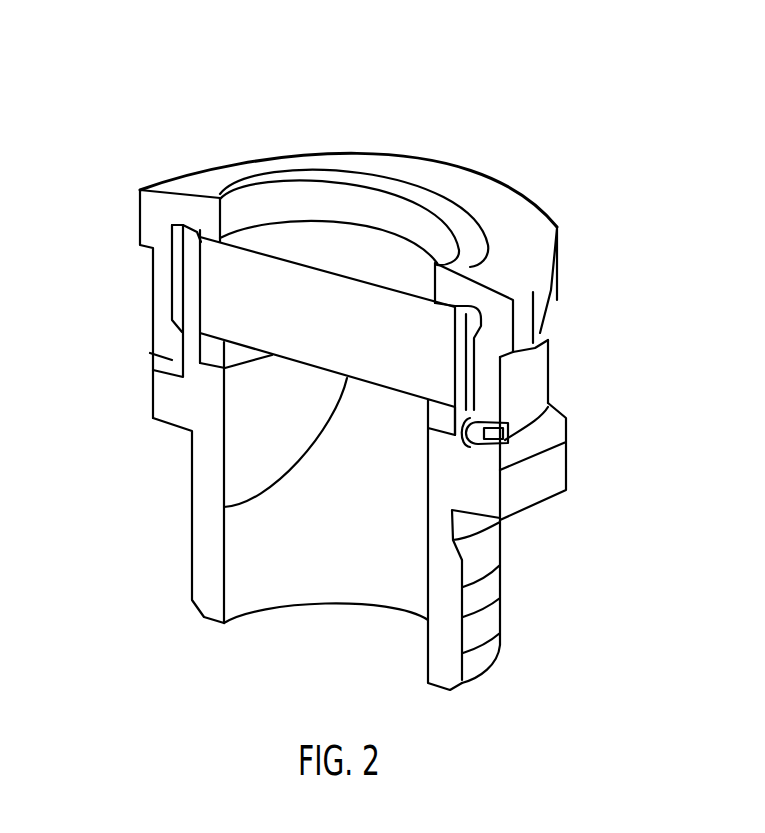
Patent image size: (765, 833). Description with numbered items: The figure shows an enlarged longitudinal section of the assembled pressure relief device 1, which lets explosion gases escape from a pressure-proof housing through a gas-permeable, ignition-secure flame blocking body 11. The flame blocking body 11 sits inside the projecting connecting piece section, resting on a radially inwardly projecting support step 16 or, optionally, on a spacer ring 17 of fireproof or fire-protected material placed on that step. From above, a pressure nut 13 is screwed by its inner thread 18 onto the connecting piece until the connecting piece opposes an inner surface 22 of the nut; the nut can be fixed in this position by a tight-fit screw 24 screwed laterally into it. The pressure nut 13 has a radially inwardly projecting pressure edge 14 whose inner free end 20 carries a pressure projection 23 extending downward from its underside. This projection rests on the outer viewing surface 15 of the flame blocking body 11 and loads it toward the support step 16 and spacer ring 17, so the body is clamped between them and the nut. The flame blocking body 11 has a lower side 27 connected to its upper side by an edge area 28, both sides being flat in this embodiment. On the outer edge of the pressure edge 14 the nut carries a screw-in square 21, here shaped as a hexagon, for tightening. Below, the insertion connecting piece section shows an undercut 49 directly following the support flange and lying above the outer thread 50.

The pressure relief device 1 is at (366, 80).
The flame blocking body 11 is at (395, 252).
The pressure nut 13 is at (543, 287).
The pressure edge 14 is at (208, 230).
The outer viewing surface 15 is at (353, 240).
The support step 16 is at (210, 378).
The spacer ring 17 is at (207, 349).
The inner thread 18 is at (183, 344).
The inner free end 20 is at (248, 229).
The screw-in square 21 is at (140, 208).
The inner surface 22 is at (178, 243).
The pressure projection 23 is at (339, 222).
The tight-fit screw 24 is at (513, 434).
The lower side 27 is at (224, 507).
The edge area 28 is at (462, 377).
The undercut 49 is at (480, 538).
The outer thread 50 is at (492, 615).